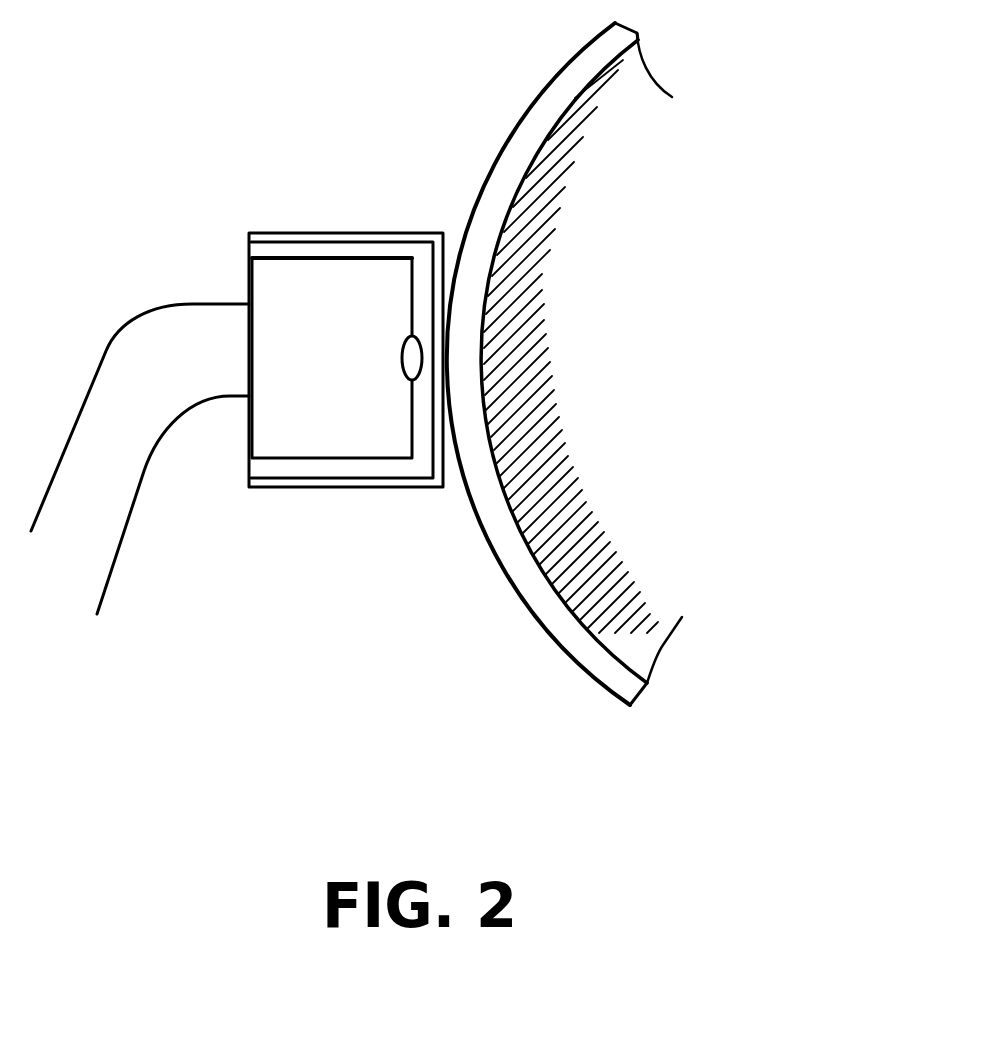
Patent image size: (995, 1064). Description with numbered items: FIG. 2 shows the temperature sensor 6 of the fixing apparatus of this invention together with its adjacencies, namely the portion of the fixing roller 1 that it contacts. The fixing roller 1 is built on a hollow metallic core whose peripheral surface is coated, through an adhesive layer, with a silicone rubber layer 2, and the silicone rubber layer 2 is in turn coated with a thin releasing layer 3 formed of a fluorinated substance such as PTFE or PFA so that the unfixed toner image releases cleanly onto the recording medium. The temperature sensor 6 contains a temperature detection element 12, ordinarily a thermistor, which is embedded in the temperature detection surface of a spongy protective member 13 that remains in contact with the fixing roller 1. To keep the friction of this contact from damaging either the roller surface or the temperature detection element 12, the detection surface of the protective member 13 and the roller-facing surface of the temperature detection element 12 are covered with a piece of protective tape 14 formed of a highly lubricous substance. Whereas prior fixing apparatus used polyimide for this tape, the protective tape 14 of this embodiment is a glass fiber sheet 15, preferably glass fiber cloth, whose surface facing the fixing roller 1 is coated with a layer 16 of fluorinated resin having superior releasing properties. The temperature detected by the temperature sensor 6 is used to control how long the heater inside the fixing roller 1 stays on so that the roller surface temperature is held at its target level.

The fixing roller 1 is at (553, 393).
The silicone rubber layer 2 is at (553, 554).
The releasing layer 3 is at (538, 603).
The temperature sensor 6 is at (205, 257).
The temperature detection element 12 is at (398, 370).
The protective member 13 is at (305, 450).
The protective tape 14 is at (489, 360).
The glass fiber sheet 15 is at (423, 410).
The layer of fluorinated resin 16 is at (440, 373).